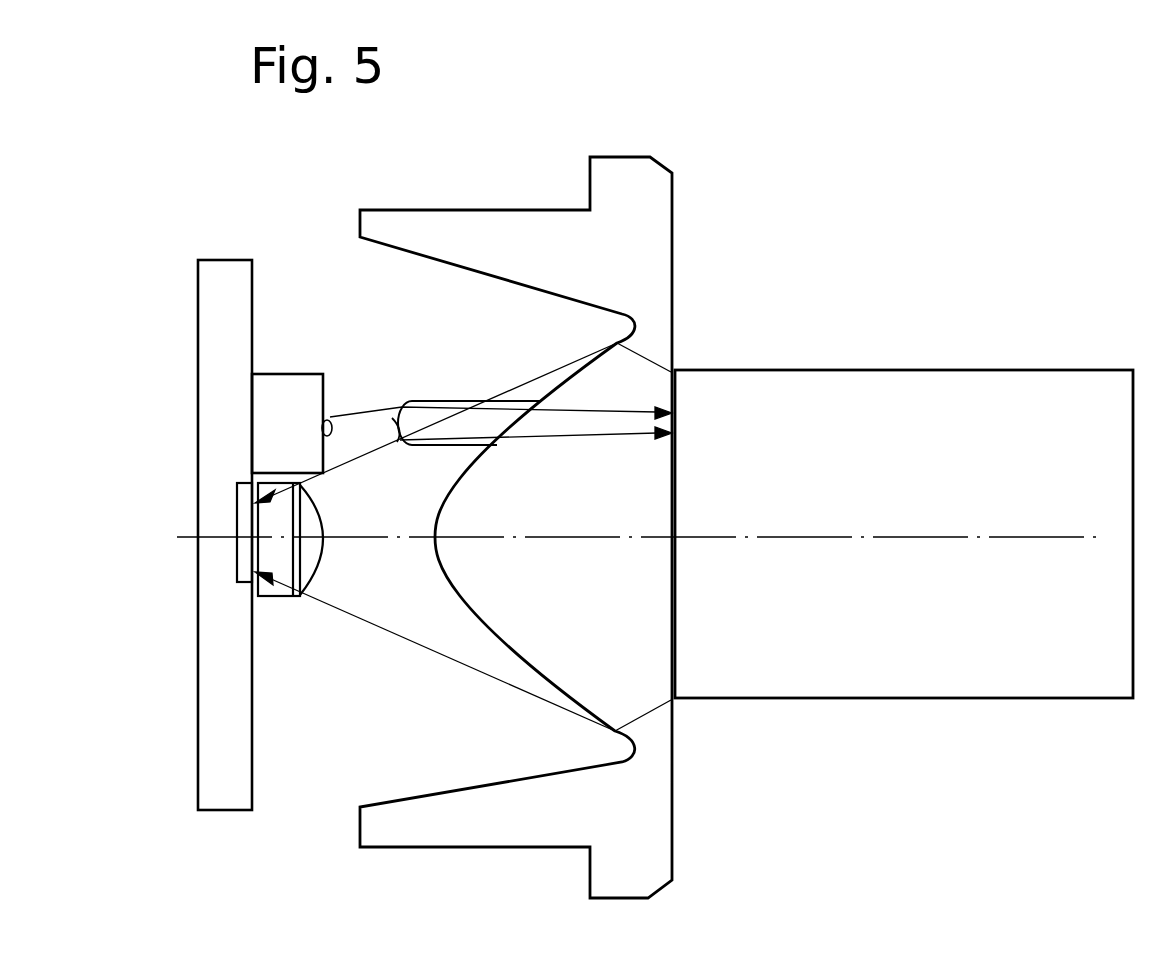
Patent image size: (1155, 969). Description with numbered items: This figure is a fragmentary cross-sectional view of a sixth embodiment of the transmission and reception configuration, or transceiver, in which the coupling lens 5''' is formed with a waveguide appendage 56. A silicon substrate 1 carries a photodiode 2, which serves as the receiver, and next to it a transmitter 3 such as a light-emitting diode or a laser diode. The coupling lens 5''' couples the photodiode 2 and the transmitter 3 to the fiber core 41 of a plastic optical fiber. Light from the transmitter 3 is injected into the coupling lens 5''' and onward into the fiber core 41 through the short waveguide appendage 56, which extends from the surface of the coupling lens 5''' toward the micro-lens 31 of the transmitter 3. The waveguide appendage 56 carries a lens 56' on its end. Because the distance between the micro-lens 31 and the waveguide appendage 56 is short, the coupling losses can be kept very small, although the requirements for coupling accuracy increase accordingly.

The substrate 1 is at (227, 705).
The photodiode 2 is at (243, 563).
The transmitter 3 is at (273, 420).
The micro-lens 31 is at (329, 416).
The coupling lens 5''' is at (614, 527).
The waveguide appendage 56 is at (501, 373).
The lens 56' is at (391, 355).
The fiber core 41 is at (952, 673).